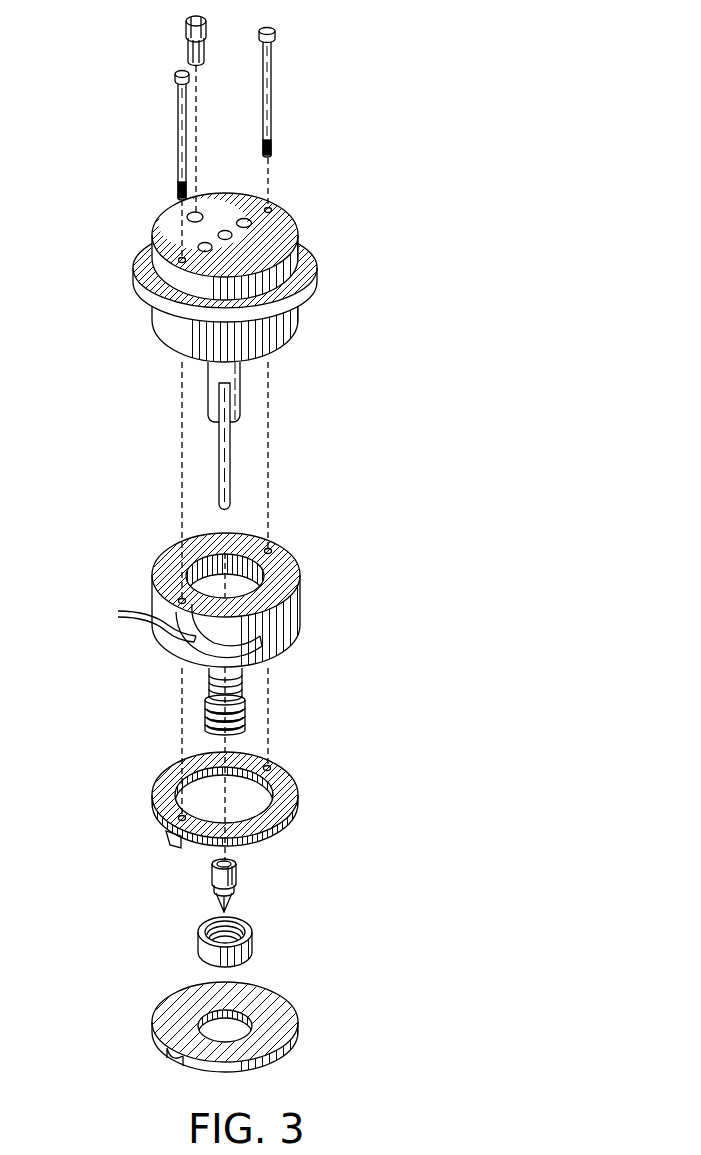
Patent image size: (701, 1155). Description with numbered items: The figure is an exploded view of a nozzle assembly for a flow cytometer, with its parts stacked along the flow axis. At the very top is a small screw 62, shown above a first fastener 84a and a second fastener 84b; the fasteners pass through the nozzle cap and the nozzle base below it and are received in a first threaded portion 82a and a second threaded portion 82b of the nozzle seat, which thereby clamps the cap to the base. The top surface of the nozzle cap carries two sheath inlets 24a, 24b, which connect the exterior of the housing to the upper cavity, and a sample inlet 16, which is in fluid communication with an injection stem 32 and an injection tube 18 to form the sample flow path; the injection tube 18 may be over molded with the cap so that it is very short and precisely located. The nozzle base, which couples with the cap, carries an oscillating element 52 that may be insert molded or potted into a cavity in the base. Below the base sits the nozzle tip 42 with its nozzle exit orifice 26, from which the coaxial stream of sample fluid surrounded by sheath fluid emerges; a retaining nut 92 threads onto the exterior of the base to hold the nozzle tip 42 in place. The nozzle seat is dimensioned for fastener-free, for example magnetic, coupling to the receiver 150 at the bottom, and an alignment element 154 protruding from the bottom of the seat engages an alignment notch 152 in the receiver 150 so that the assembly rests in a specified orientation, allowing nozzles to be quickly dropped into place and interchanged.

The set screw 62 is at (185, 30).
The first fastener 84a is at (177, 120).
The second fastener 84b is at (273, 78).
The sheath inlet 24a is at (206, 243).
The sheath inlet 24b is at (246, 219).
The sample inlet 16 is at (228, 235).
The injection stem 32 is at (208, 396).
The injection tube 18 is at (231, 465).
The oscillating element 52 is at (190, 650).
The first threaded portion 82a is at (180, 814).
The second threaded portion 82b is at (268, 762).
The alignment element 154 is at (167, 836).
The nozzle tip 42 is at (239, 876).
The nozzle exit orifice 26 is at (218, 905).
The retaining nut 92 is at (253, 944).
The receiver 150 is at (273, 1018).
The alignment notch 152 is at (172, 1066).